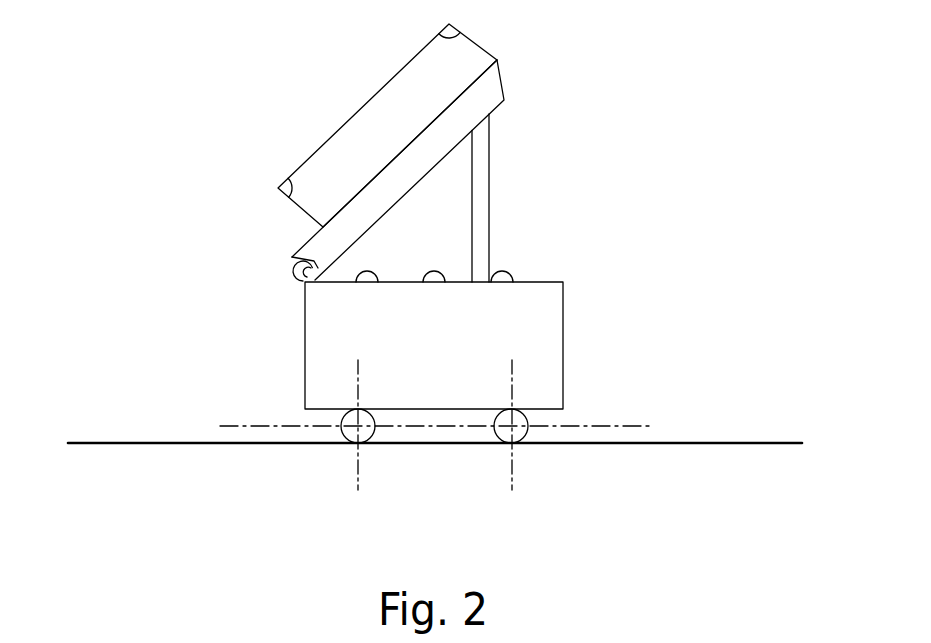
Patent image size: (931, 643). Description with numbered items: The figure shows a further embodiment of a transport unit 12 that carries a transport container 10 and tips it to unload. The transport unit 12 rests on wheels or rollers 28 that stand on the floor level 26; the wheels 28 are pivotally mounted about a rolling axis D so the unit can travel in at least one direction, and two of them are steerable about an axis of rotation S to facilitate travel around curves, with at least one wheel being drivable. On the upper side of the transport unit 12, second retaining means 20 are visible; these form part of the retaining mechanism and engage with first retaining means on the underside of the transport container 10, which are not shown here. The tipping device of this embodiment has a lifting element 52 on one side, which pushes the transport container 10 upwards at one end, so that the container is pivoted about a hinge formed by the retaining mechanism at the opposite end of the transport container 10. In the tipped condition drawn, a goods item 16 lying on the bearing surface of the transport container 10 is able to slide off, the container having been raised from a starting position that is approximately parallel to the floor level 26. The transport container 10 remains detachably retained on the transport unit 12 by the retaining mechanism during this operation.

The transport container 10 is at (490, 83).
The transport unit 12 is at (305, 333).
The goods item 16 is at (338, 148).
The second retaining means 20 is at (367, 296).
The floor level 26 is at (749, 433).
The wheels or rollers 28 is at (363, 454).
The lifting element 52 is at (483, 185).
The rolling axis D is at (232, 435).
The axis of rotation S is at (346, 471).